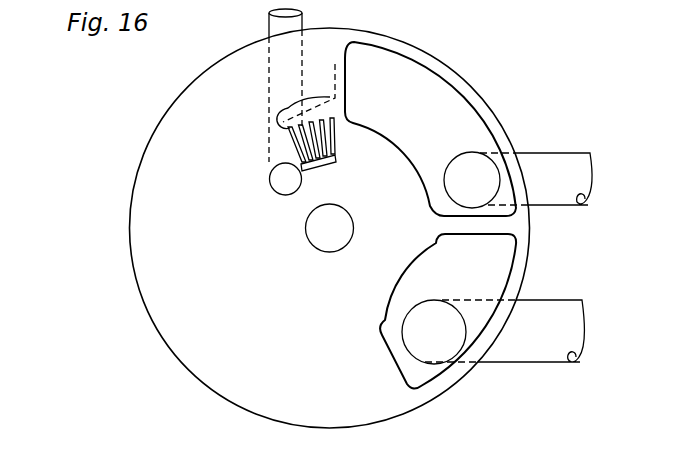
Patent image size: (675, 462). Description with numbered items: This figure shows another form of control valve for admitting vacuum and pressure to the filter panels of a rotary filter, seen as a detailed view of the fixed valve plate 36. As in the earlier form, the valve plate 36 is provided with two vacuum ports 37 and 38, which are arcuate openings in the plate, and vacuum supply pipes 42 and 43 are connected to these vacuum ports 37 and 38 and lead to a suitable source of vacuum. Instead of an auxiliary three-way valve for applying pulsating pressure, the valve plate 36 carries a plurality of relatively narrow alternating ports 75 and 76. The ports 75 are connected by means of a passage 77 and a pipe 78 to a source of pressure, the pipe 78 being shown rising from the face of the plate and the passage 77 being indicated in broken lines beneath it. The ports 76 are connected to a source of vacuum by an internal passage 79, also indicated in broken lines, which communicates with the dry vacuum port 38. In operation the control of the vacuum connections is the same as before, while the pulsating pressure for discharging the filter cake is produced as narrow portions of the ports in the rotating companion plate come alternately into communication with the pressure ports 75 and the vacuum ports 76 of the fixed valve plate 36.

The valve plate 36 is at (330, 228).
The vacuum port 37 is at (448, 311).
The vacuum port 38 is at (430, 129).
The vacuum supply pipe 42 is at (505, 331).
The vacuum supply pipe 43 is at (536, 179).
The alternating ports 75 is at (340, 141).
The alternating ports 76 is at (318, 125).
The passage 77 is at (313, 172).
The pipe 78 is at (268, 23).
The internal passage 79 is at (312, 84).